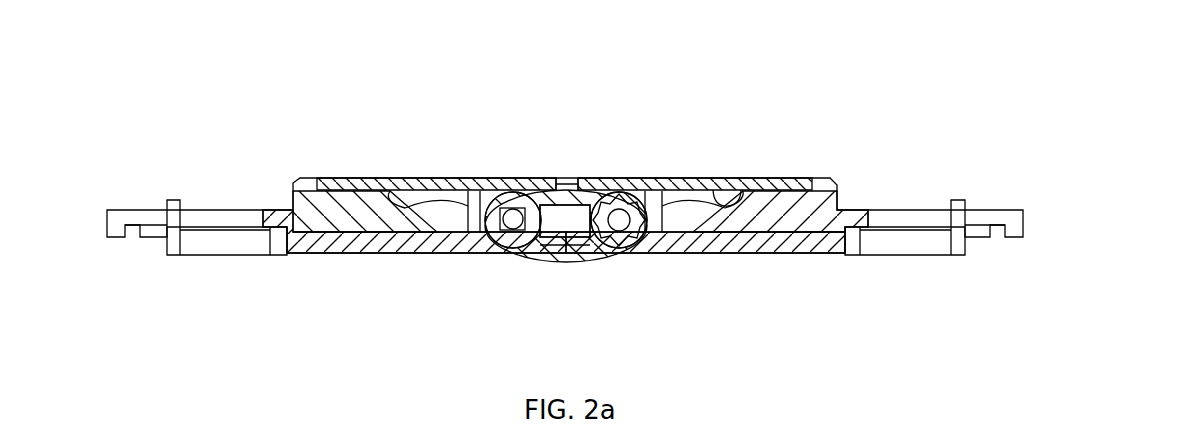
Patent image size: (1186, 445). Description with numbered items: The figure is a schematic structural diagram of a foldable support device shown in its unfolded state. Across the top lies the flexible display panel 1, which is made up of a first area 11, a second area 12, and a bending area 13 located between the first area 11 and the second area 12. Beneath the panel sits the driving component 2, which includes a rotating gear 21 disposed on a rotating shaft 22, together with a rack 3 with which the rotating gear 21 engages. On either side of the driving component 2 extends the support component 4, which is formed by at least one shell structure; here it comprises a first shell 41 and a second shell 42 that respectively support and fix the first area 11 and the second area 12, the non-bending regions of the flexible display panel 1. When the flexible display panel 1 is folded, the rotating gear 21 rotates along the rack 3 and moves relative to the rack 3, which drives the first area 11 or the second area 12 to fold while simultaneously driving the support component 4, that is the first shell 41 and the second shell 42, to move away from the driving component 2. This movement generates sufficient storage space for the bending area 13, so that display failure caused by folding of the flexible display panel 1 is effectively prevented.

The flexible display panel 1 is at (572, 95).
The first area 11 is at (437, 180).
The second area 12 is at (745, 183).
The bending area 13 is at (568, 180).
The driving component 2 is at (566, 287).
The rotating gear 21 is at (628, 222).
The rotating shaft 22 is at (517, 222).
The rack 3 is at (577, 242).
The support component 4 is at (877, 235).
The first shell 41 is at (403, 242).
The second shell 42 is at (785, 242).